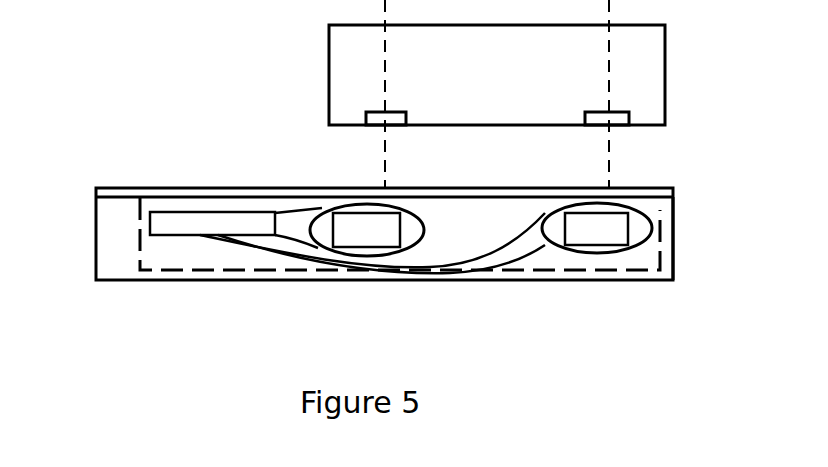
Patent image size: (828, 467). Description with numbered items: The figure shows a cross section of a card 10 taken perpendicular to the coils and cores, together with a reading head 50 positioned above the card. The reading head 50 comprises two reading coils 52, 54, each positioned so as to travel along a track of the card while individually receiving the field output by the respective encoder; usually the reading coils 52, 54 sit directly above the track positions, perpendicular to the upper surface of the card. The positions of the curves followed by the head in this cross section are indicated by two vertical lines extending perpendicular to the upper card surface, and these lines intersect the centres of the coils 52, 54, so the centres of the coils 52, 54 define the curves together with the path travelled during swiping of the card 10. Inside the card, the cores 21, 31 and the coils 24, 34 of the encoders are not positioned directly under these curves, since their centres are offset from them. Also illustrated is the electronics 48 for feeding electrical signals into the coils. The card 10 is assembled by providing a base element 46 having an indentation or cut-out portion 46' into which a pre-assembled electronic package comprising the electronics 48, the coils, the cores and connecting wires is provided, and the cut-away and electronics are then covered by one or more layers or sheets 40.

The card 10 is at (119, 259).
The core 21 is at (364, 233).
The coil 24 is at (325, 251).
The core 31 is at (604, 239).
The coil 34 is at (576, 255).
The layer or sheet 40 is at (677, 187).
The base element 46 is at (726, 243).
The indentation or cut-out portion 46' is at (365, 277).
The electronics 48 is at (197, 237).
The reading head 50 is at (497, 75).
The reading coil 52 is at (409, 118).
The reading coil 54 is at (627, 111).